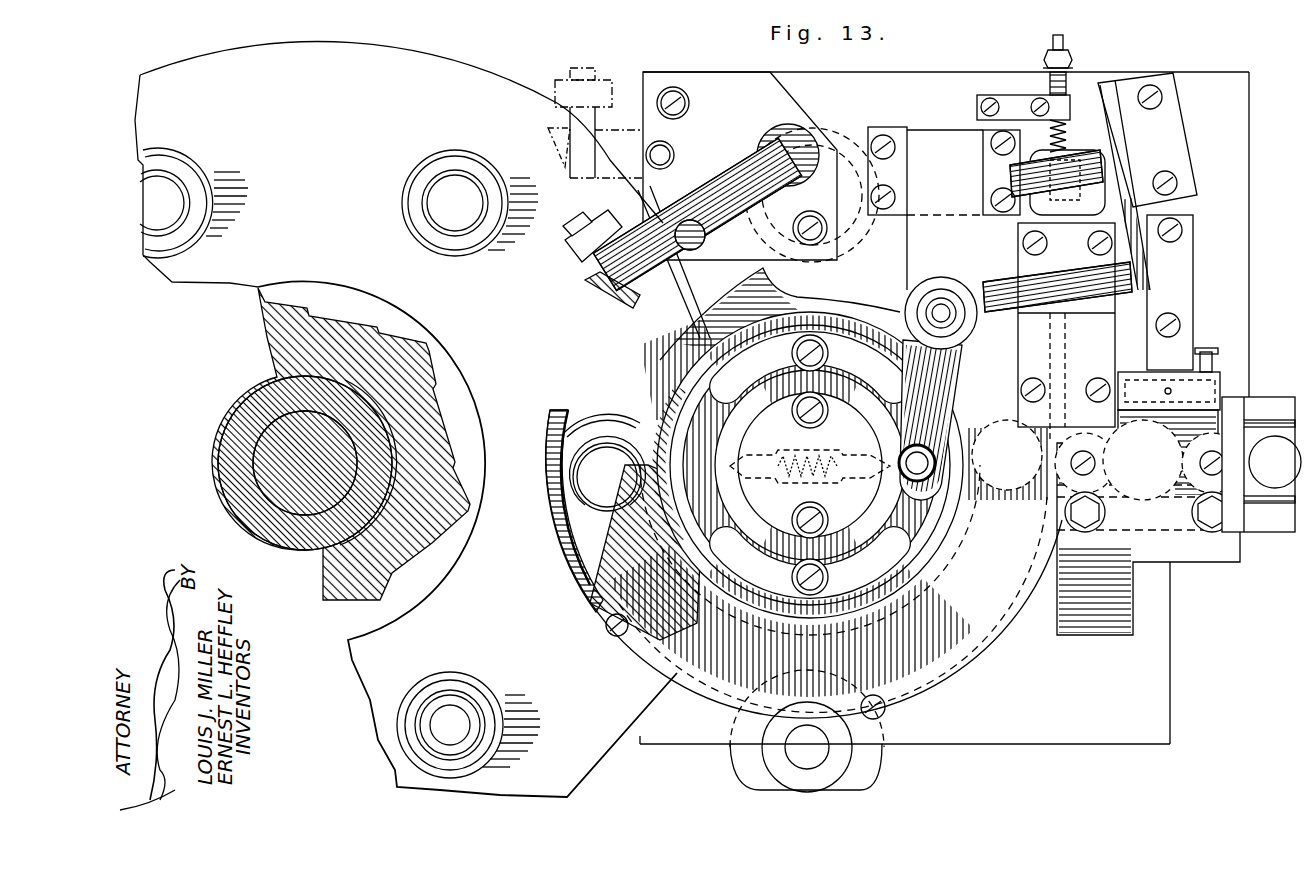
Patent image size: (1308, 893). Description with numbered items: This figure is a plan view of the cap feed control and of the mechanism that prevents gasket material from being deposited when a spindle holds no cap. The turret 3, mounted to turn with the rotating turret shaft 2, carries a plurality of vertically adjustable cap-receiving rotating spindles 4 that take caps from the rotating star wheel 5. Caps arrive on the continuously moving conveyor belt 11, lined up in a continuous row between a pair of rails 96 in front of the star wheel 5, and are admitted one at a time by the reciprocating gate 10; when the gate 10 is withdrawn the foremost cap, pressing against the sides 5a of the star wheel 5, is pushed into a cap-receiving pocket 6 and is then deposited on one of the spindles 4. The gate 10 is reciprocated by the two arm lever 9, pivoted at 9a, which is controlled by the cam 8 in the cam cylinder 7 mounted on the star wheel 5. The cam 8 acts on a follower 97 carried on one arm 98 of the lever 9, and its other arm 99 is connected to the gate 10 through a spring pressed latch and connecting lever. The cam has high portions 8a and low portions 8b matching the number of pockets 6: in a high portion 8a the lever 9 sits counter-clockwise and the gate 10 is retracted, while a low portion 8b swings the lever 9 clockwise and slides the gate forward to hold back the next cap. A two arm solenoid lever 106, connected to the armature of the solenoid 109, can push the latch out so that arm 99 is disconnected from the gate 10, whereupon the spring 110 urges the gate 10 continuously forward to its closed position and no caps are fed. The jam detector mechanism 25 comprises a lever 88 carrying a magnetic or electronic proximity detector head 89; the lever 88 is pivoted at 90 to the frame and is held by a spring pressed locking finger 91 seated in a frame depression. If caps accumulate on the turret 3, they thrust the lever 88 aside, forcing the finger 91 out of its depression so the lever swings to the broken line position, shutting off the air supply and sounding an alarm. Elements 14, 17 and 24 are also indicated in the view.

The rotating turret shaft 2 is at (255, 420).
The turret 3 is at (302, 62).
The cap-receiving rotating spindles 4 is at (197, 219).
The rotating star wheel 5 is at (804, 493).
The sides of rotating star wheel 5a is at (945, 581).
The cap-receiving pockets 6 is at (782, 296).
The cam cylinder 7 is at (893, 320).
The cam 8 is at (918, 540).
The high portions 8a is at (890, 577).
The low portions 8b is at (920, 500).
The two arm lever 9 is at (962, 358).
The pivot 9a is at (945, 300).
The reciprocating gate 10 is at (1068, 385).
The conveyor belt 11 is at (1287, 532).
The column 14 is at (1165, 300).
The pivot axis 17 is at (822, 125).
The block 24 is at (1120, 358).
The detector mechanism 25 is at (725, 165).
The lever 88 is at (793, 229).
The proximity detector head 89 is at (575, 250).
The pivot 90 is at (778, 135).
The spring pressed locking finger 91 is at (700, 258).
The rails 96 is at (1250, 420).
The follower 97 is at (930, 478).
The arm 98 is at (917, 390).
The arm 99 is at (1000, 290).
The two arm solenoid lever 106 is at (1030, 235).
The solenoid 109 is at (1010, 172).
The spring 110 is at (1090, 122).